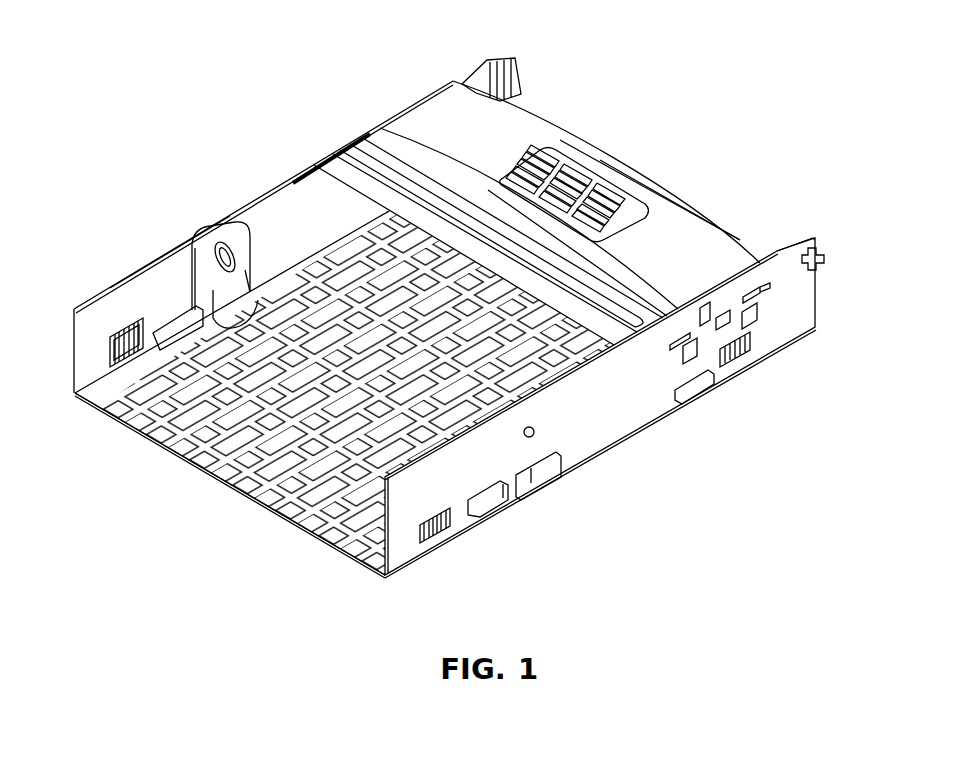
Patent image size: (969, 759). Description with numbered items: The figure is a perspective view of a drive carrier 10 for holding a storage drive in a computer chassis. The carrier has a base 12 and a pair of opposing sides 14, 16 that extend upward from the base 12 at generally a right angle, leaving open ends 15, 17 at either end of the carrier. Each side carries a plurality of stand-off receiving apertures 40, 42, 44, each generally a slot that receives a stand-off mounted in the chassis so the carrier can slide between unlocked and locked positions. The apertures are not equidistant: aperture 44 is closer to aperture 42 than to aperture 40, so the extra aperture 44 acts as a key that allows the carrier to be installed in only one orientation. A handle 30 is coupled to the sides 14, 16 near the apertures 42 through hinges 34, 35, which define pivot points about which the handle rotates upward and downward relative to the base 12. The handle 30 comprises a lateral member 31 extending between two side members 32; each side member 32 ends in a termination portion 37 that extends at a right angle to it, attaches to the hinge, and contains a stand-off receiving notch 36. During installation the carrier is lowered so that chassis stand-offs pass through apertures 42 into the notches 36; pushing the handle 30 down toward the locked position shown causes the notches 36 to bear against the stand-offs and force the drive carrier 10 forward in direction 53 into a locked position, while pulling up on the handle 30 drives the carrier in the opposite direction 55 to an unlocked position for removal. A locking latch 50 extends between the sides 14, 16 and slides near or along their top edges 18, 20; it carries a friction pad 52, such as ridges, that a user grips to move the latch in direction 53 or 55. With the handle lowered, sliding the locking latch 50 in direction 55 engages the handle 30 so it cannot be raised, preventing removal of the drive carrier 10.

The drive carrier 10 is at (232, 72).
The base 12 is at (231, 470).
The side 14 is at (118, 300).
The open end 15 is at (138, 414).
The side 16 is at (590, 419).
The open end 17 is at (679, 149).
The top edge 18 is at (165, 260).
The top edge 20 is at (777, 250).
The handle 30 is at (367, 135).
The lateral member 31 is at (405, 160).
The side member 32 is at (287, 208).
The hinge 34 is at (230, 240).
The hinge 35 is at (532, 428).
The stand-off receiving notch 36 is at (237, 328).
The termination portion 37 is at (242, 268).
The stand-off receiving aperture 40 is at (700, 395).
The stand-off receiving aperture 42 is at (548, 484).
The stand-off receiving aperture 44 is at (176, 329).
The locking latch 50 is at (677, 240).
The friction pad 52 is at (551, 160).
The direction 53 is at (530, 80).
The direction 55 is at (650, 35).